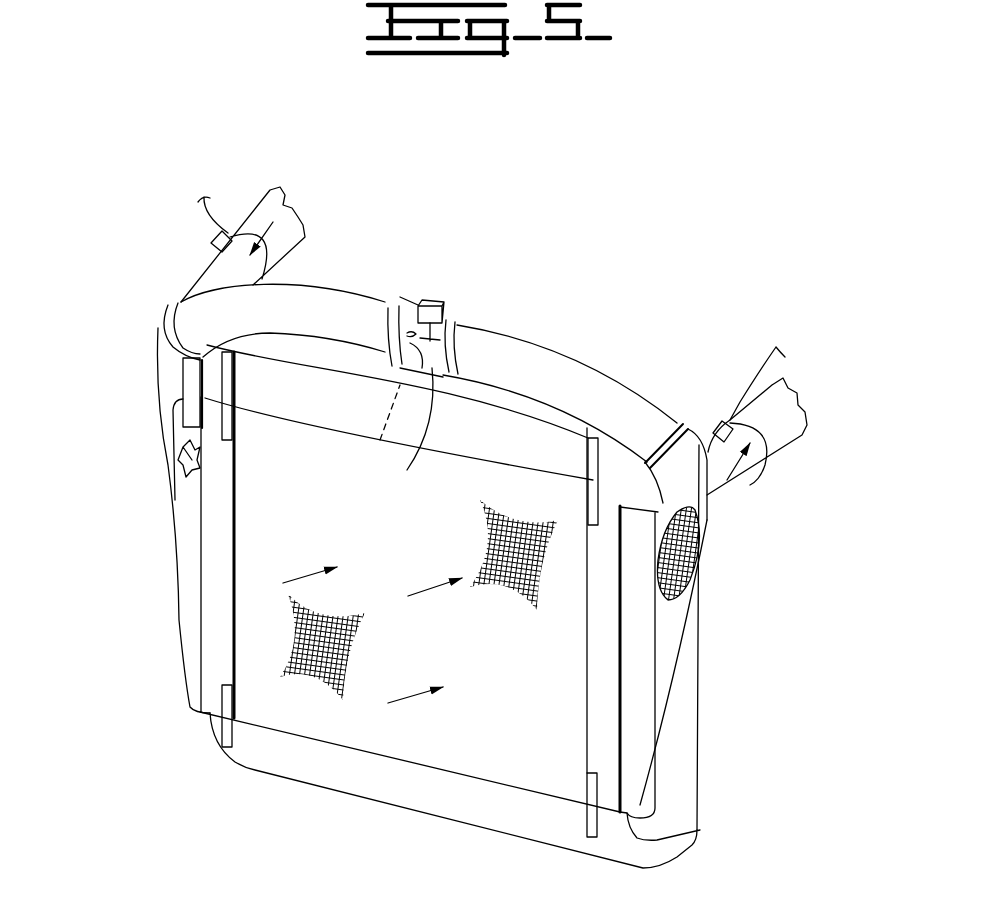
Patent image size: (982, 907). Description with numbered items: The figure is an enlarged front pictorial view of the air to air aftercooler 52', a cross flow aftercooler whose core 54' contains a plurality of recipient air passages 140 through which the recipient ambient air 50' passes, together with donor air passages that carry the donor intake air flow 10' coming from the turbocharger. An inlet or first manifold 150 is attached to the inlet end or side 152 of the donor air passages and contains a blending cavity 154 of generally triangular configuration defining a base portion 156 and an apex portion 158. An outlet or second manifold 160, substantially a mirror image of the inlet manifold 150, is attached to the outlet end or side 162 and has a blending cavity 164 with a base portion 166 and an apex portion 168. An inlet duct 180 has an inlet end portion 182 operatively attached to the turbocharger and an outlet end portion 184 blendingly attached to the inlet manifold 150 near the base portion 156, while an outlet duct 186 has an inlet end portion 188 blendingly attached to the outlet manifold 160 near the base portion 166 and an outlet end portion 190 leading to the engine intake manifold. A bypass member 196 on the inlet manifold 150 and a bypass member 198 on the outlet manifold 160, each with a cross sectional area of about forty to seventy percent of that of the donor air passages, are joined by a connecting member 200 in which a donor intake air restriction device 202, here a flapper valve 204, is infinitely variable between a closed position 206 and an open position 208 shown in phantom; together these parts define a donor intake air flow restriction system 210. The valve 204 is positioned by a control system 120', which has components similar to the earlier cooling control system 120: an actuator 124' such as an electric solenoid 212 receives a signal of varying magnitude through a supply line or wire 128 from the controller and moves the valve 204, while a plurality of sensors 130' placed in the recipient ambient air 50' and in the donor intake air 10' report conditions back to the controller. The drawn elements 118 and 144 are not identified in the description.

The donor intake air flow 10' is at (522, 347).
The recipient ambient air 50' is at (372, 631).
The aftercooler 52' is at (450, 790).
The core 54' is at (399, 562).
The inlet opening 118 is at (712, 491).
The cooling control system 120 is at (312, 314).
The control system 120' is at (693, 223).
The actuator 124' is at (508, 220).
The supply line or wire 128 is at (423, 300).
The sensors 130' is at (417, 331).
The recipient air passages 140 is at (497, 575).
The inlet screen 144 is at (685, 548).
The inlet manifold 150 is at (173, 523).
The inlet end 152 is at (233, 563).
The blending cavity 154 is at (180, 458).
The base portion 156 is at (192, 287).
The apex portion 158 is at (192, 713).
The outlet manifold 160 is at (667, 710).
The outlet end 162 is at (620, 732).
The blending cavity 164 is at (697, 525).
The base portion 166 is at (705, 427).
The apex portion 168 is at (700, 830).
The inlet duct 180 is at (255, 208).
The inlet end portion 182 is at (303, 220).
The outlet end portion 184 is at (209, 267).
The outlet duct 186 is at (800, 434).
The inlet end portion 188 is at (763, 477).
The outlet end portion 190 is at (746, 404).
The bypass member 196 is at (181, 301).
The bypass member 198 is at (560, 352).
The connecting member 200 is at (448, 312).
The donor intake air restriction device 202 is at (455, 318).
The flapper valve 204 is at (440, 302).
The closed position 206 is at (410, 465).
The open position 208 is at (380, 440).
The donor intake air flow restriction system 210 is at (482, 311).
The electric solenoid 212 is at (447, 303).